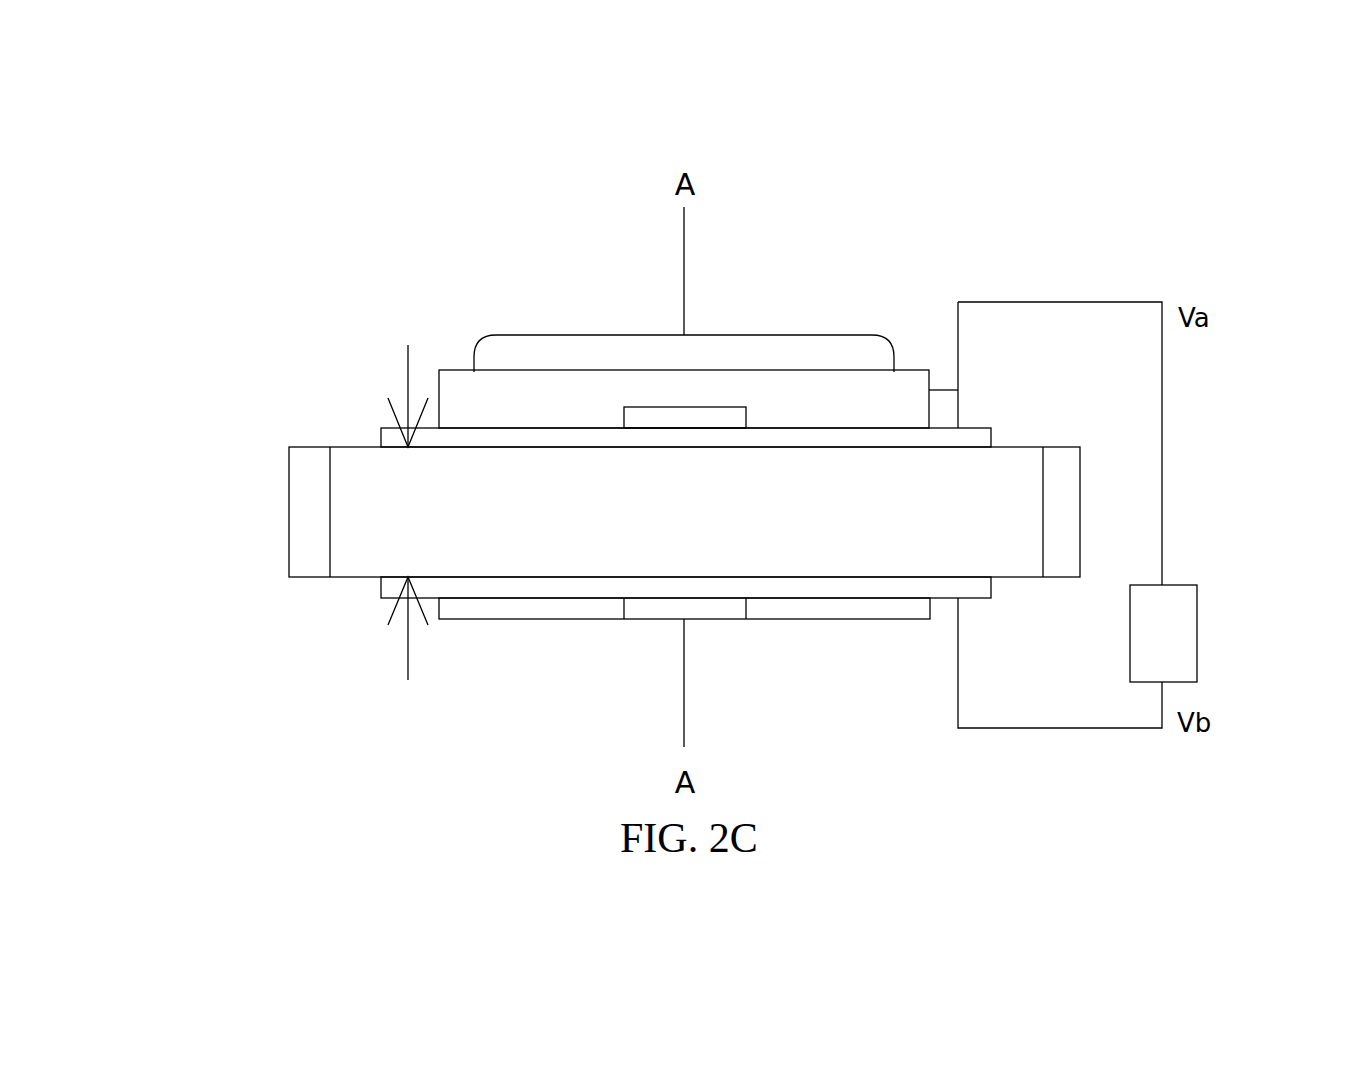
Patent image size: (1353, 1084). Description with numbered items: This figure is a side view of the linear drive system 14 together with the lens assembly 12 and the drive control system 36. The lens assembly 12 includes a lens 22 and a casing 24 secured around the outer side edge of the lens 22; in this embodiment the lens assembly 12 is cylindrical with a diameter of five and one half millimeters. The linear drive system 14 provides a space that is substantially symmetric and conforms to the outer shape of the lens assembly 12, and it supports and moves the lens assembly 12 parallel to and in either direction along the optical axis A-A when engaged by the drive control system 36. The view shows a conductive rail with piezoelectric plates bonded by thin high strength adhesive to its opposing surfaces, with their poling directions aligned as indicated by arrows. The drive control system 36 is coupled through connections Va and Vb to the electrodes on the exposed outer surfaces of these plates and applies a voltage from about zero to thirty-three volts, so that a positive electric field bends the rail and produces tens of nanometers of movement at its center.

The lens assembly 12 is at (460, 368).
The linear drive system 14 is at (290, 520).
The lens 22 is at (727, 334).
The casing 24 is at (962, 390).
The drive control system 36 is at (1197, 632).